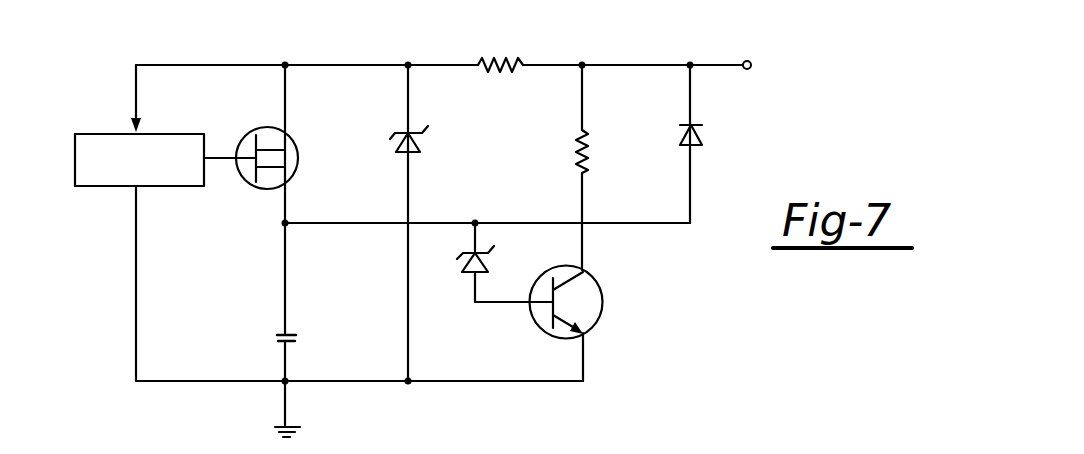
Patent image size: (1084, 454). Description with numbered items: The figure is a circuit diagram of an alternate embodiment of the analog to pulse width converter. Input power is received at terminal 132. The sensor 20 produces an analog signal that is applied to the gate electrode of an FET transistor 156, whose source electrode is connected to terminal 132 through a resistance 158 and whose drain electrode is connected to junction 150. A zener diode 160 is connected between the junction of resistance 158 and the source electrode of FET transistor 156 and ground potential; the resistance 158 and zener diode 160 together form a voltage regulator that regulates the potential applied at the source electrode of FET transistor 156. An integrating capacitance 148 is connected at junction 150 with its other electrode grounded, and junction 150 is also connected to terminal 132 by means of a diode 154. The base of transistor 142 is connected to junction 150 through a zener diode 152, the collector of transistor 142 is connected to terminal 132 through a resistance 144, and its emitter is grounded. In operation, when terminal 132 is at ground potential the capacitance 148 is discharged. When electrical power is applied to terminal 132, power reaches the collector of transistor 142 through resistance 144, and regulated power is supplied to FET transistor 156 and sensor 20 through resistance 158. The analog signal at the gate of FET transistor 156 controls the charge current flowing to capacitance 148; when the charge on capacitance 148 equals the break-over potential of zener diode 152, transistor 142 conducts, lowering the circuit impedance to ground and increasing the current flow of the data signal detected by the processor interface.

The sensor 20 is at (117, 188).
The terminal 132 is at (753, 59).
The transistor 142 is at (600, 318).
The resistance 144 is at (575, 143).
The integrating capacitance 148 is at (279, 334).
The junction 150 is at (282, 229).
The zener diode 152 is at (489, 247).
The diode 154 is at (704, 135).
The FET transistor 156 is at (262, 190).
The resistance 158 is at (500, 56).
The zener diode 160 is at (421, 141).